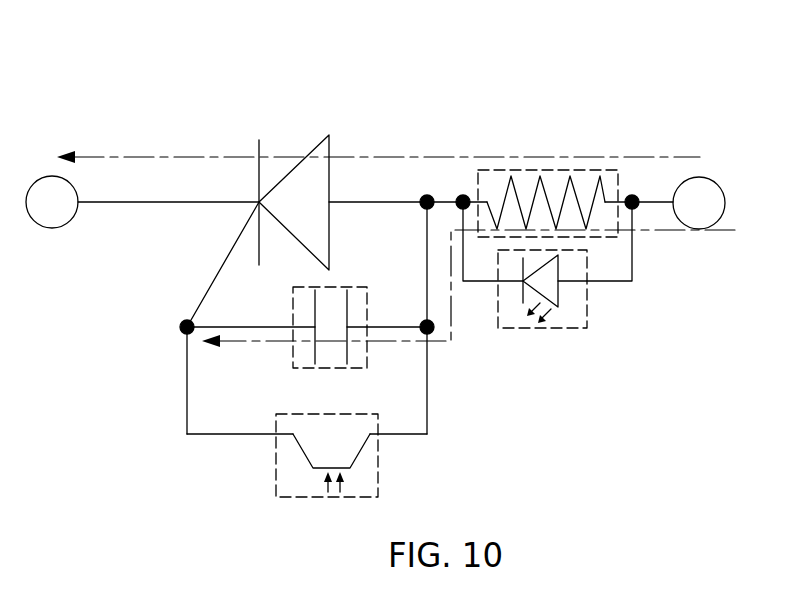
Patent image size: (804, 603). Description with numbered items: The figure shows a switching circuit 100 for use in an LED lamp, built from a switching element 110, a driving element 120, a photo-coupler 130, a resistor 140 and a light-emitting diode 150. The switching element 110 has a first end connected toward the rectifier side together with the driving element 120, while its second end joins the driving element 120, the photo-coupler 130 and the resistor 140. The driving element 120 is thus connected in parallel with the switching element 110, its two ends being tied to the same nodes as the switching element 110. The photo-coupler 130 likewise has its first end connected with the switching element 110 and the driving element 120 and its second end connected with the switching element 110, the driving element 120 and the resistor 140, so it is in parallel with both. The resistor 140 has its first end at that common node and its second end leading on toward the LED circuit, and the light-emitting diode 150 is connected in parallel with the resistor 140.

The switching circuit 100 is at (482, 68).
The switching element 110 is at (330, 135).
The driving element 120 is at (358, 287).
The photo-coupler 130 is at (379, 463).
The resistor 140 is at (600, 170).
The light-emitting diode 150 is at (563, 329).